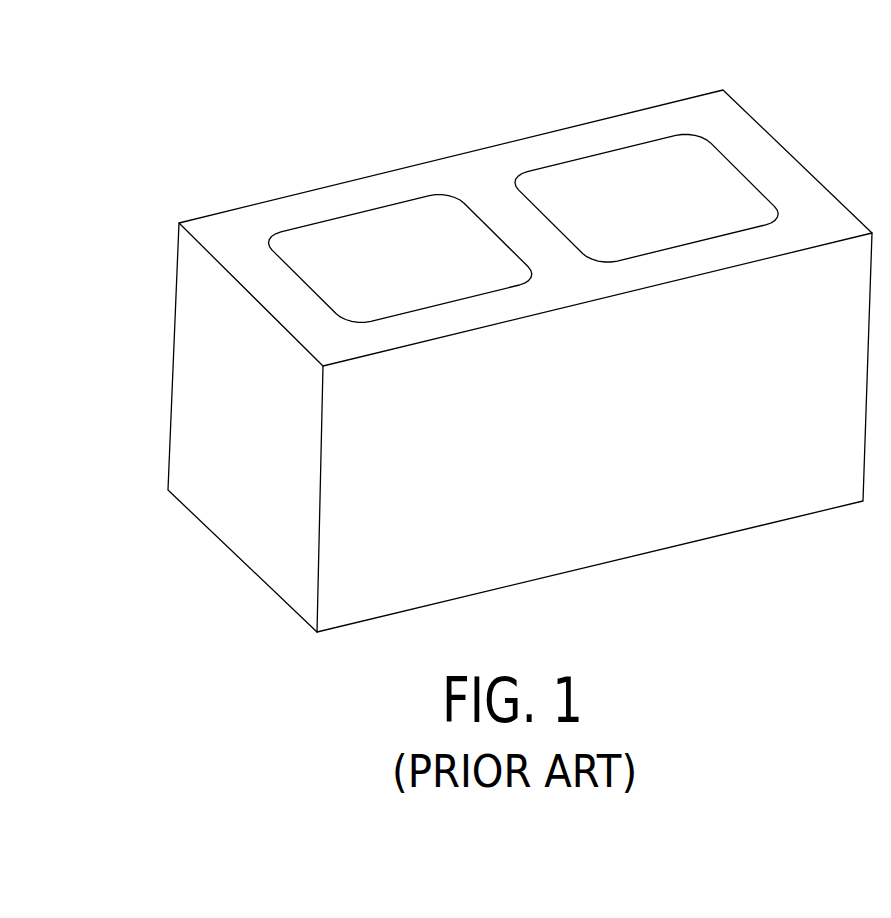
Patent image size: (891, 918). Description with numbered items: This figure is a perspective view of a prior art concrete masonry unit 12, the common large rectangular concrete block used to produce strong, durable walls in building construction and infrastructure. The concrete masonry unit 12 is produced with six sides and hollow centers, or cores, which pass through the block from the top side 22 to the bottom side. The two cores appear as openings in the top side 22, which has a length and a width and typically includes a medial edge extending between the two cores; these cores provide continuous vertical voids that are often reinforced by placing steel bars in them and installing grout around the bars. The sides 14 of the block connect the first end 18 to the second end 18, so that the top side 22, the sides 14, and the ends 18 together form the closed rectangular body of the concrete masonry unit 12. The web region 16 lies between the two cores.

The concrete masonry unit 12 is at (468, 335).
The side 14 is at (594, 432).
The central web 16 is at (616, 286).
The end 18 is at (222, 427).
The top side 22 is at (525, 211).